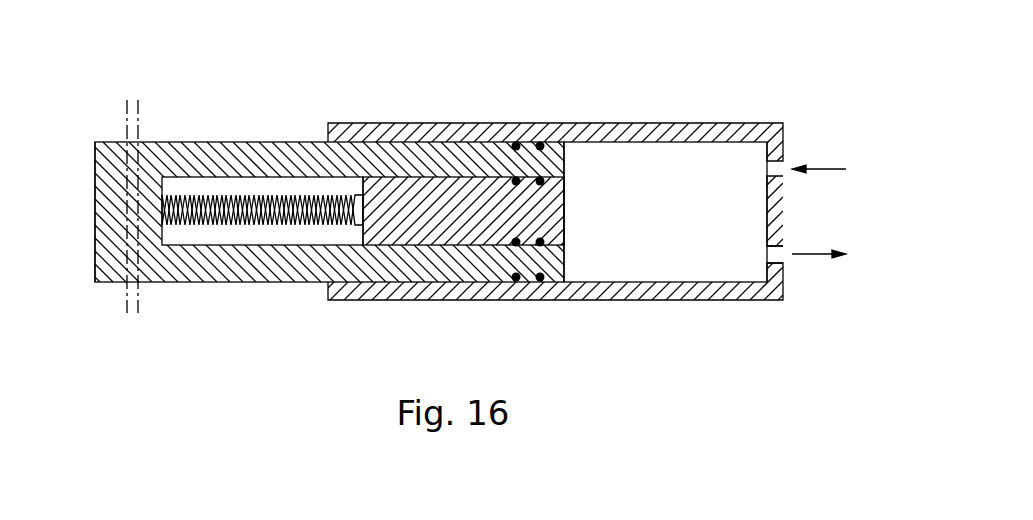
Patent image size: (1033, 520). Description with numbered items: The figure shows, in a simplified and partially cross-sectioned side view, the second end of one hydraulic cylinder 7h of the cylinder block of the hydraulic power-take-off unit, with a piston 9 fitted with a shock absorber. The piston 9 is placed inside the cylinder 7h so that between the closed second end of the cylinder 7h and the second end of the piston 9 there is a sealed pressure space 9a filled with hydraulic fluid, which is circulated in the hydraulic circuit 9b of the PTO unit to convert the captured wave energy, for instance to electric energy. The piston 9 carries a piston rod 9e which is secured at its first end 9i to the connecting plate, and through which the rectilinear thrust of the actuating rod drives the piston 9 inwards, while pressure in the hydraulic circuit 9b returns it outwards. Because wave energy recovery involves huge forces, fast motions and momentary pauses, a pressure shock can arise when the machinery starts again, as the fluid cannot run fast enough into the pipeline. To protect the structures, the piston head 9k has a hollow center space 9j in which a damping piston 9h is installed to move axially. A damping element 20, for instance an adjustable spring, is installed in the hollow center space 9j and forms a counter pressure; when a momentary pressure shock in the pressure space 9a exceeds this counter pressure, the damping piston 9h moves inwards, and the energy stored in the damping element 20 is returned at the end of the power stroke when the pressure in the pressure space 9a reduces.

The piston 9 is at (455, 187).
The pressure space 9a is at (733, 150).
The hydraulic circuit 9b is at (818, 254).
The piston rod 9e is at (278, 148).
The damping piston 9h is at (554, 222).
The first end 9i is at (95, 198).
The hollow center space 9j is at (208, 238).
The piston head 9k is at (564, 160).
The hydraulic cylinder 7h is at (608, 128).
The damping element 20 is at (220, 212).